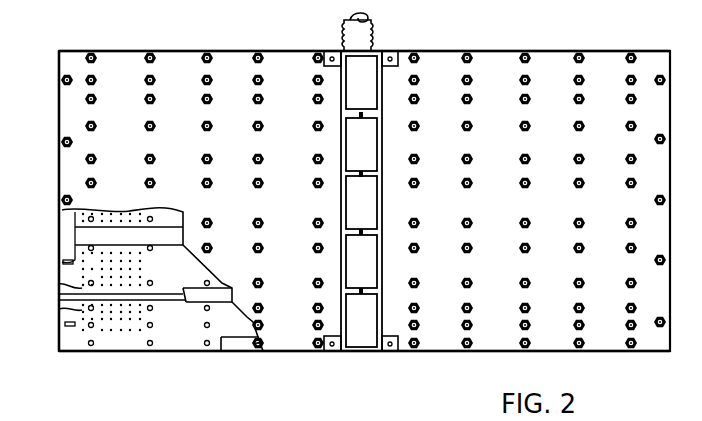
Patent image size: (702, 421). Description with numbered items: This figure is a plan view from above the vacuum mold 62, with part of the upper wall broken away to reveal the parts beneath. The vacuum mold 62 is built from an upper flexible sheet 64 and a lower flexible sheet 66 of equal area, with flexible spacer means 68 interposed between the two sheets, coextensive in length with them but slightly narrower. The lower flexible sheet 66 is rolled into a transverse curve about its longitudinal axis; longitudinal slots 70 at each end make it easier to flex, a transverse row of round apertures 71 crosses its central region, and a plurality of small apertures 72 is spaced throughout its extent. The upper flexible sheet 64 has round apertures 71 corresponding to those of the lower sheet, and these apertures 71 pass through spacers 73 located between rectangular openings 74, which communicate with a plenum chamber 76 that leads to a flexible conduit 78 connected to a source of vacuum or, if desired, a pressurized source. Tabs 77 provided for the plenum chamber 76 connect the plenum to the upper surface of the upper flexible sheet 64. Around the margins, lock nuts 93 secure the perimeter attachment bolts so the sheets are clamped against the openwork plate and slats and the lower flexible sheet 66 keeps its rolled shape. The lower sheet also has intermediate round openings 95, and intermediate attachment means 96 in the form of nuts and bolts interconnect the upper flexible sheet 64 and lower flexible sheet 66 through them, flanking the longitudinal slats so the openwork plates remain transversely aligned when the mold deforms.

The vacuum mold 62 is at (596, 358).
The upper flexible sheet 64 is at (215, 51).
The lower flexible sheet 66 is at (125, 352).
The flexible spacer means 68 is at (59, 342).
The longitudinal slots 70 is at (136, 295).
The round apertures 71 is at (363, 232).
The small apertures 72 is at (59, 309).
The spacers 73 is at (378, 155).
The rectangular openings 74 is at (365, 318).
The plenum chamber 76 is at (383, 278).
The tabs 77 is at (398, 52).
The flexible conduit 78 is at (378, 31).
The lock nuts 93 is at (524, 343).
The intermediate round openings 95 is at (152, 217).
The intermediate attachment means 96 is at (207, 159).